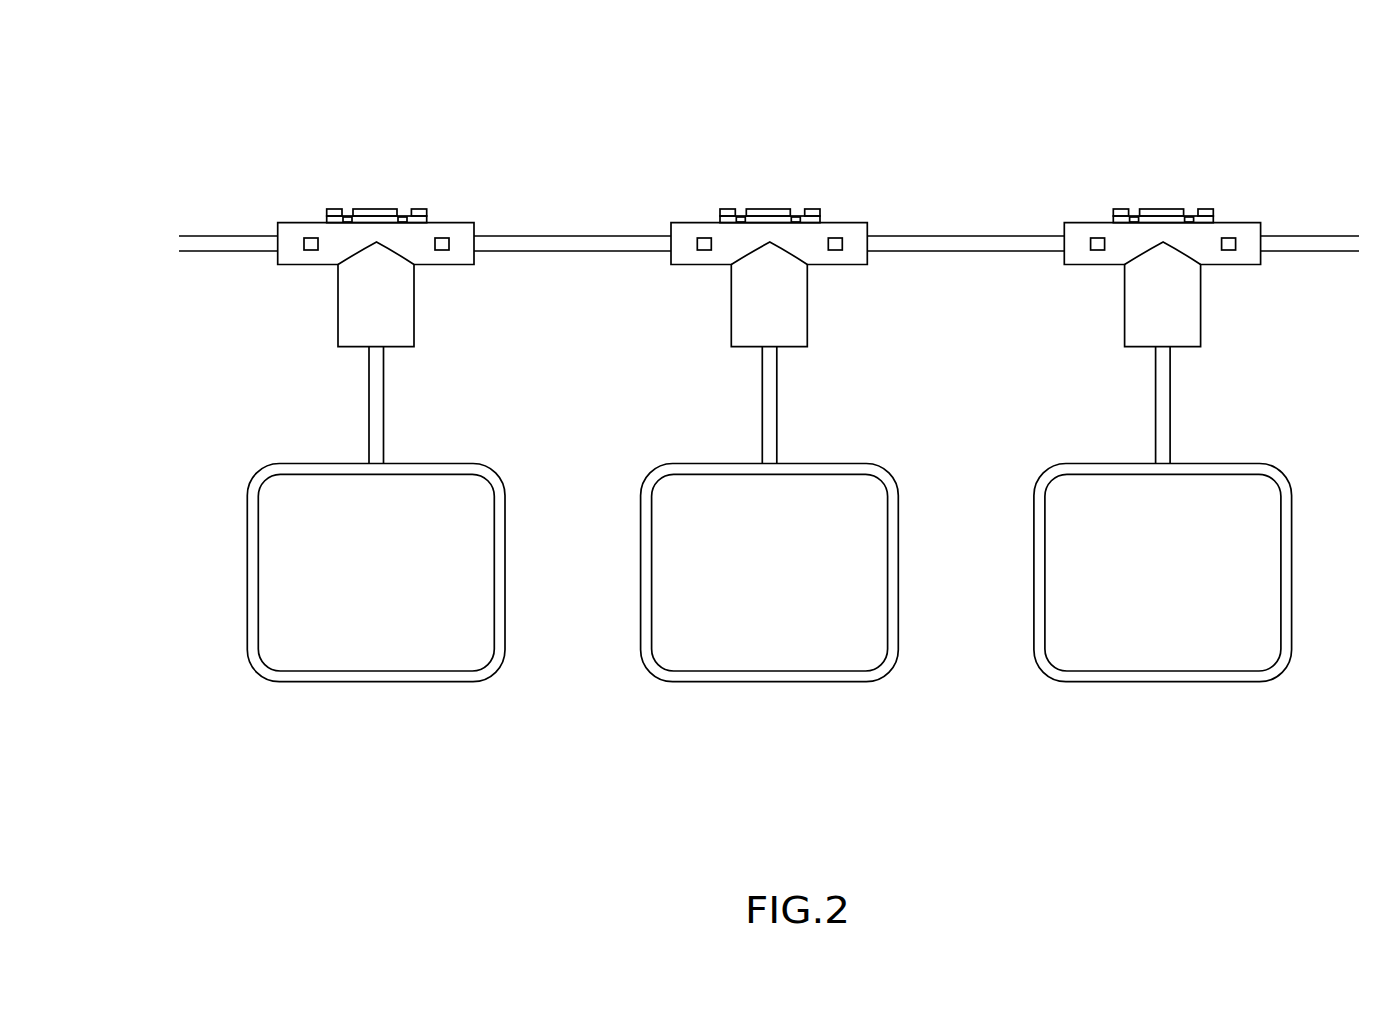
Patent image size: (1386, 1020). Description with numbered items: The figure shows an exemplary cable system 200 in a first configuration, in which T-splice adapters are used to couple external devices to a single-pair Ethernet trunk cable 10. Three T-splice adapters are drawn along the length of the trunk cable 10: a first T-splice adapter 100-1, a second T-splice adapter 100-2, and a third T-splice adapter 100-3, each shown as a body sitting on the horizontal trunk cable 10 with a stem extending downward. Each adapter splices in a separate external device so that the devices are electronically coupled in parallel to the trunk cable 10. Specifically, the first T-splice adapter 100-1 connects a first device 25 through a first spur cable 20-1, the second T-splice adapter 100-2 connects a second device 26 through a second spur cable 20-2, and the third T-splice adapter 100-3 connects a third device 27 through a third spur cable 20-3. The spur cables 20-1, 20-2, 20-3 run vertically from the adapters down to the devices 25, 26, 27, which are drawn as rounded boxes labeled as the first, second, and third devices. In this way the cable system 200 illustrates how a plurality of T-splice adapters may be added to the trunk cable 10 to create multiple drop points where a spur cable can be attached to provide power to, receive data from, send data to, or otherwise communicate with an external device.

The cable system 200 is at (803, 34).
The trunk cable 10 is at (241, 242).
The first T-splice adapter 100-1 is at (380, 235).
The second T-splice adapter 100-2 is at (773, 235).
The third T-splice adapter 100-3 is at (1166, 234).
The first spur cable 20-1 is at (376, 372).
The second spur cable 20-2 is at (769, 372).
The third spur cable 20-3 is at (1162, 372).
The first device 25 is at (277, 567).
The second device 26 is at (670, 567).
The third device 27 is at (1062, 567).